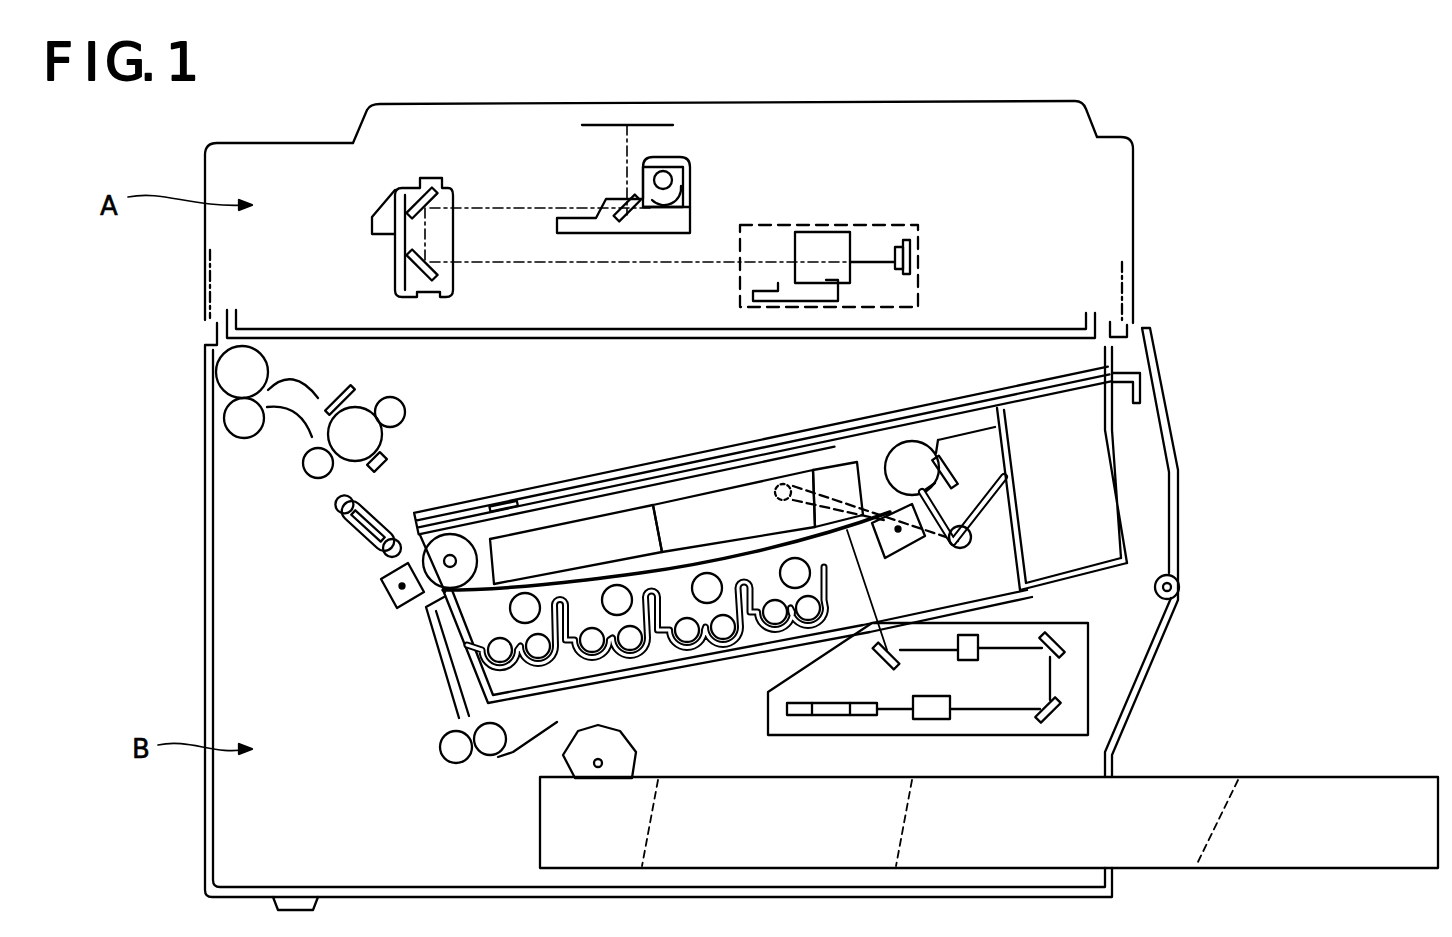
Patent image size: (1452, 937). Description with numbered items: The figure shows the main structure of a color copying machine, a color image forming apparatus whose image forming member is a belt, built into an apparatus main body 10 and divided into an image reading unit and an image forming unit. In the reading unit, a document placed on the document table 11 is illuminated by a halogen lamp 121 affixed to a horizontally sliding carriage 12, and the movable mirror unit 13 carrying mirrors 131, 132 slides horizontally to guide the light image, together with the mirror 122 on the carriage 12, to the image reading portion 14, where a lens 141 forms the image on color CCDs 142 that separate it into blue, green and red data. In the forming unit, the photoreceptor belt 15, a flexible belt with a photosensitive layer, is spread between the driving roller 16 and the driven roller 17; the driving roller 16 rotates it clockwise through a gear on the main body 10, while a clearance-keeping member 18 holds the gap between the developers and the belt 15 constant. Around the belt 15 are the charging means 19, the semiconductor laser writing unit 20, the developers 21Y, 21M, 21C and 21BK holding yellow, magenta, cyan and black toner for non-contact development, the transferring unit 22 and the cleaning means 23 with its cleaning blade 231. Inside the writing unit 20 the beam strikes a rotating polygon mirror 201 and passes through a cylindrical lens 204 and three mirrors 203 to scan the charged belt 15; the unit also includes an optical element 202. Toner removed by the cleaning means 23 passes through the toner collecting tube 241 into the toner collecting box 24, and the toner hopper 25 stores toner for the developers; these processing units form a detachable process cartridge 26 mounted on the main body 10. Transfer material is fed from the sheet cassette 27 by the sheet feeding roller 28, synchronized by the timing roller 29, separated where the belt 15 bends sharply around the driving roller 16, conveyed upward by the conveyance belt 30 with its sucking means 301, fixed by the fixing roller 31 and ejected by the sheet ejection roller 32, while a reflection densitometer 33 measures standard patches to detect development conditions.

The apparatus main body 10 is at (1240, 212).
The document table 11 is at (830, 113).
The carriage 12 is at (683, 222).
The halogen lamp 121 is at (650, 182).
The mirror 122 is at (622, 222).
The movable mirror unit 13 is at (393, 280).
The mirror 131 is at (455, 205).
The mirror 132 is at (448, 278).
The image reading portion 14 is at (797, 226).
The lens 141 is at (847, 232).
The color CCD 142 is at (912, 238).
The photoreceptor belt 15 is at (540, 510).
The driving roller 16 is at (450, 535).
The driven roller 17 is at (884, 456).
The clearance-keeping member 18 is at (586, 540).
The charging means 19 is at (906, 550).
The semiconductor laser writing unit 20 is at (1090, 690).
The polygon mirror 201 is at (812, 716).
The polygon mirror / lens 202 is at (942, 720).
The mirrors 203 is at (1058, 648).
The cylindrical lens 204 is at (975, 662).
The developer 21BK is at (497, 641).
The developer 21C is at (617, 615).
The developer 21M is at (690, 628).
The developer 21Y is at (786, 600).
The transferring unit 22 is at (390, 598).
The cleaning means 23 is at (977, 481).
The cleaning blade 231 is at (968, 462).
The toner collecting box 24 is at (672, 512).
The toner collecting tube 241 is at (812, 490).
The toner hopper 25 is at (1103, 513).
The process cartridge 26 is at (1133, 537).
The sheet cassette 27 is at (1356, 777).
The sheet feeding roller 28 is at (637, 758).
The timing roller 29 is at (489, 756).
The conveyance belt 30 is at (352, 541).
The sucking means 301 is at (370, 545).
The fixing roller 31 is at (335, 465).
The sheet ejection roller 32 is at (235, 420).
The reflection densitometer 33 is at (500, 508).